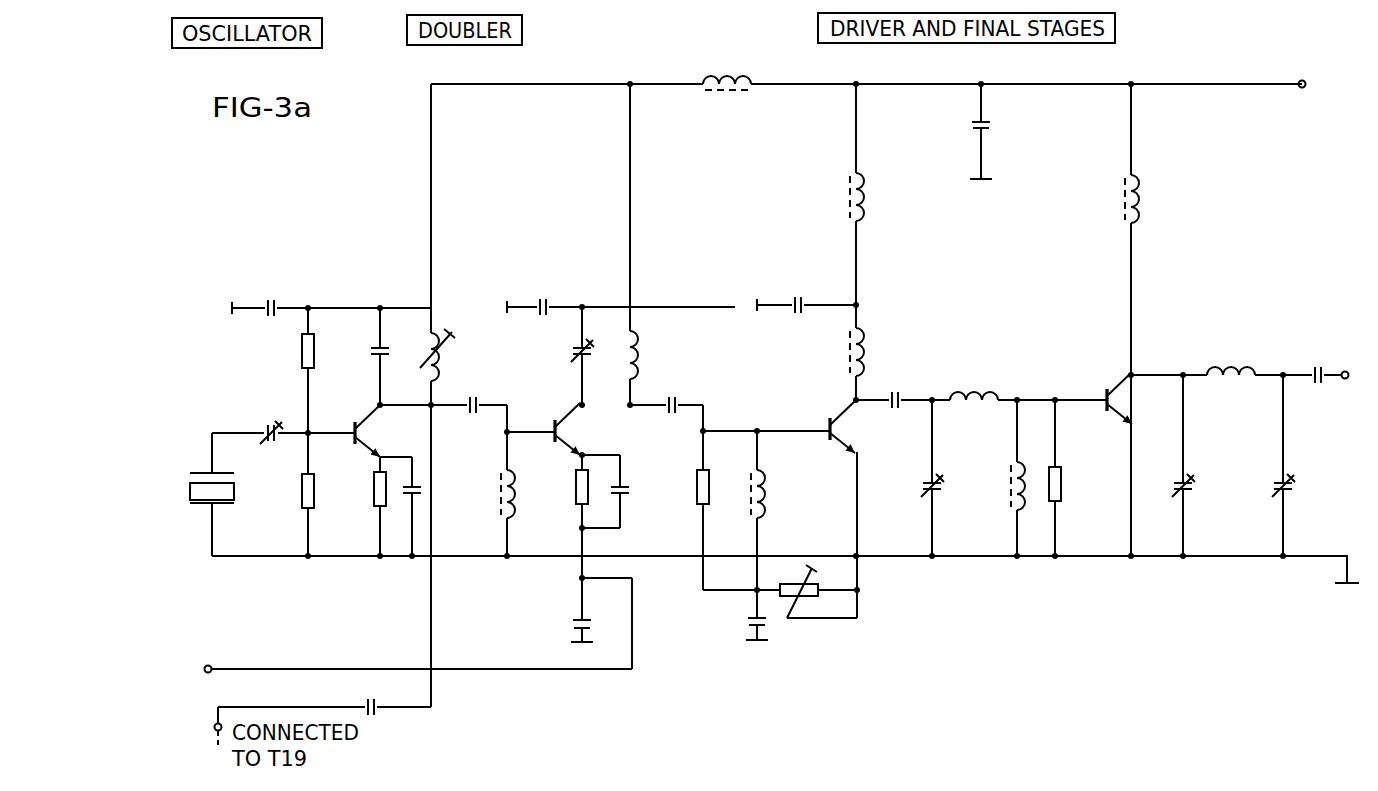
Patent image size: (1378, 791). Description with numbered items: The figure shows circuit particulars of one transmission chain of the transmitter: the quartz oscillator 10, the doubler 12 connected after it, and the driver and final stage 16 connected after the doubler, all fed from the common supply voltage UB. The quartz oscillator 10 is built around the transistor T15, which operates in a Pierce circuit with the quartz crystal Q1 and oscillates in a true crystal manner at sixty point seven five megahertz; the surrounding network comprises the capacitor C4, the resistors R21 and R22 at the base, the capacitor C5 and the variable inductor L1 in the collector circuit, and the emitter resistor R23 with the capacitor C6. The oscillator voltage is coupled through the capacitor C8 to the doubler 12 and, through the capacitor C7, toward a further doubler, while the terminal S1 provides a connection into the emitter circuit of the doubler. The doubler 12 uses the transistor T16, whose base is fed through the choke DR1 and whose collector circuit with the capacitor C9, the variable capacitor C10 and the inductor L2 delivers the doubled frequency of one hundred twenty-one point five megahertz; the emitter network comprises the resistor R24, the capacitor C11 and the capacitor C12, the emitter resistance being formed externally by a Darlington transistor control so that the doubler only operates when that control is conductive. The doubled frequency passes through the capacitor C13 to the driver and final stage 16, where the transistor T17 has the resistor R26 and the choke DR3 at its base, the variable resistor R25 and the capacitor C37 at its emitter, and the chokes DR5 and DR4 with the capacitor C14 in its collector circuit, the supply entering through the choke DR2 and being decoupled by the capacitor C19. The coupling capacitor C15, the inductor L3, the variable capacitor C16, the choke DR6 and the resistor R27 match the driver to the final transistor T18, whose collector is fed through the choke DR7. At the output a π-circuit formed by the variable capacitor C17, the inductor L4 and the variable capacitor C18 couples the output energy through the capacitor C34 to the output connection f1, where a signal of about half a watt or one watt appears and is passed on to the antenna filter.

The quartz oscillator 10 is at (312, 226).
The doubler 12 is at (532, 226).
The driver and final stage 16 is at (1001, 226).
The capacitor C4 is at (331, 296).
The resistor R21 is at (284, 370).
The quartz crystal Q1 is at (203, 494).
The resistor R22 is at (284, 494).
The transistor T15 is at (382, 431).
The capacitor C5 is at (363, 356).
The inductor L1 is at (445, 355).
The capacitor C8 is at (469, 391).
The resistor R23 is at (358, 506).
The capacitor C6 is at (431, 493).
The choke DR1 is at (490, 480).
The capacitor C7 is at (323, 714).
The terminal S1 is at (237, 671).
The capacitor C9 is at (621, 296).
The capacitor C10 is at (564, 356).
The inductor L2 is at (651, 355).
The transistor T16 is at (582, 429).
The capacitor C13 is at (666, 391).
The resistor R24 is at (559, 516).
The capacitor C11 is at (641, 493).
The capacitor C12 is at (563, 610).
The resistor R26 is at (683, 497).
The choke DR3 is at (781, 510).
The variable resistor R25 is at (780, 550).
The capacitor C37 is at (735, 615).
The choke DR2 is at (728, 69).
The choke DR5 is at (882, 197).
The capacitor C19 is at (1002, 131).
The choke DR4 is at (882, 352).
The capacitor C14 is at (806, 295).
The transistor T17 is at (858, 427).
The capacitor C15 is at (894, 388).
The inductor L3 is at (974, 383).
The capacitor C16 is at (911, 478).
The choke DR6 is at (991, 478).
The resistor R27 is at (1078, 478).
The transistor T18 is at (1134, 398).
The choke DR7 is at (1157, 199).
The inductor L4 is at (1231, 358).
The capacitor C34 is at (1317, 362).
The capacitor C17 is at (1207, 465).
The capacitor C18 is at (1307, 465).
The supply voltage UB is at (1304, 87).
The output connection f1 is at (1346, 378).